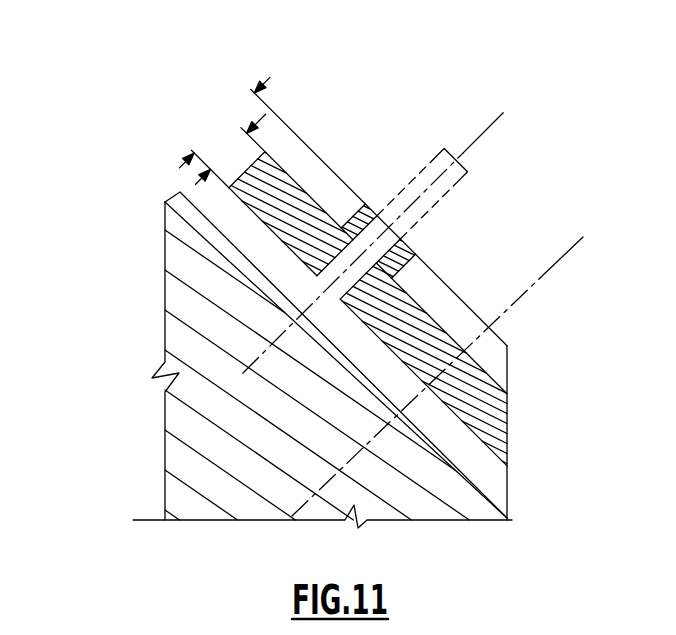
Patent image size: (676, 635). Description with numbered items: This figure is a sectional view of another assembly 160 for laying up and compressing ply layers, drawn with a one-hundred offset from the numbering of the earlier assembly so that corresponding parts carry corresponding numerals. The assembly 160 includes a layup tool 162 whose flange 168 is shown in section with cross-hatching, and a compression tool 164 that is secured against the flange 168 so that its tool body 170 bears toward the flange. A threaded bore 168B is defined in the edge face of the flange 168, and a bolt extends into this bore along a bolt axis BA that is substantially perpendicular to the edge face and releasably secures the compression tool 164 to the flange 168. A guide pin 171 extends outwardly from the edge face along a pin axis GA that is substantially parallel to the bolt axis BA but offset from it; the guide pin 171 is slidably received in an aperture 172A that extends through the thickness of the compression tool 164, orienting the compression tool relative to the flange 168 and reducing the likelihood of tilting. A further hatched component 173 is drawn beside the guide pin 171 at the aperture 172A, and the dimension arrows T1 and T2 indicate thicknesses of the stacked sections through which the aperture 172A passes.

The bolted joint assembly 160 is at (124, 88).
The adhesive layer 162 is at (180, 199).
The composite laminate layer 164 is at (245, 154).
The base structure 168 is at (165, 323).
The base structure bottom surface 168B is at (377, 480).
The laminate layer right portion 170 is at (508, 410).
The fastener bolt 171 is at (441, 150).
The fastener bushing flange 172A is at (280, 185).
The nut 173 is at (410, 252).
The pin axis GA is at (503, 113).
The bolt axis BA is at (583, 237).
The thickness T1 is at (265, 114).
The thickness T2 is at (270, 78).